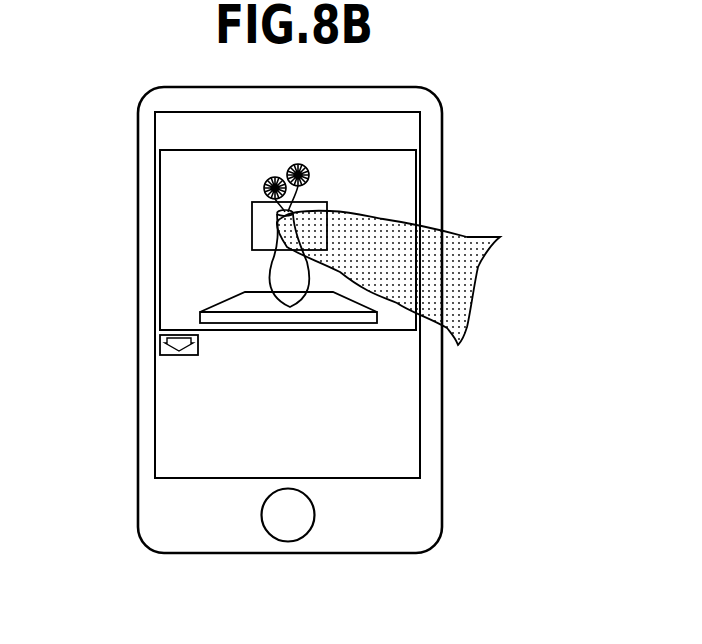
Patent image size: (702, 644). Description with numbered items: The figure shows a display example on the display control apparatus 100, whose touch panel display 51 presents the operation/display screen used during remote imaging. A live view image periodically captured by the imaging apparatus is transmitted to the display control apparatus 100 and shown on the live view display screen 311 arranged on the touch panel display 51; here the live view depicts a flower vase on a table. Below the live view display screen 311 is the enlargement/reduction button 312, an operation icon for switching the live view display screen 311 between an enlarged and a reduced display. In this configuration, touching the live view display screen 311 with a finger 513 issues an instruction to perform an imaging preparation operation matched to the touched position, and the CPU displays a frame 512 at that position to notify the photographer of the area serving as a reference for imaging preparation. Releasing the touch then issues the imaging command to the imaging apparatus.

The display control apparatus 100 is at (442, 185).
The touch panel display 51 is at (403, 132).
The live view display screen 311 is at (173, 255).
The enlargement/reduction button 312 is at (159, 346).
The frame 512 is at (253, 222).
The user's finger 513 is at (457, 282).